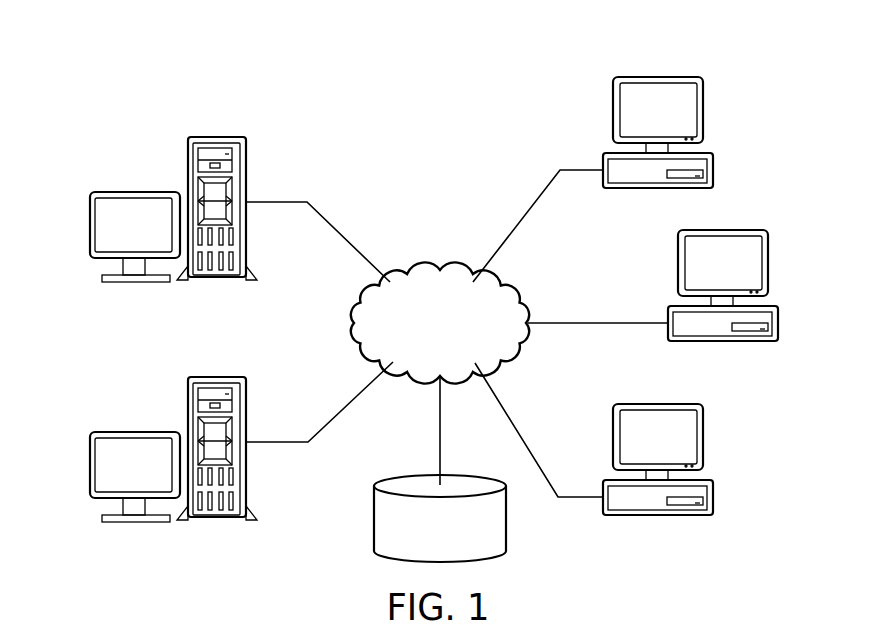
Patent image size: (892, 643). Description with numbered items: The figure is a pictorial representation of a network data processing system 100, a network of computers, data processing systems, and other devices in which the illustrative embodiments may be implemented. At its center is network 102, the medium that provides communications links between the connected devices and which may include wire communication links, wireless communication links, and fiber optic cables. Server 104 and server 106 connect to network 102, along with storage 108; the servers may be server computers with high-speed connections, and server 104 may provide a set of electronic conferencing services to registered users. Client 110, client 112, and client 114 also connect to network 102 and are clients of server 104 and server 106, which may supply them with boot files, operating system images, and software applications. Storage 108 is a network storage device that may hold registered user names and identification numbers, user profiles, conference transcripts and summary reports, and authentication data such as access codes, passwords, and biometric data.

The network data processing system 100 is at (314, 118).
The network 102 is at (418, 273).
The server 104 is at (90, 465).
The server 106 is at (90, 227).
The storage 108 is at (374, 518).
The client 110 is at (713, 162).
The client 112 is at (778, 330).
The client 114 is at (713, 505).